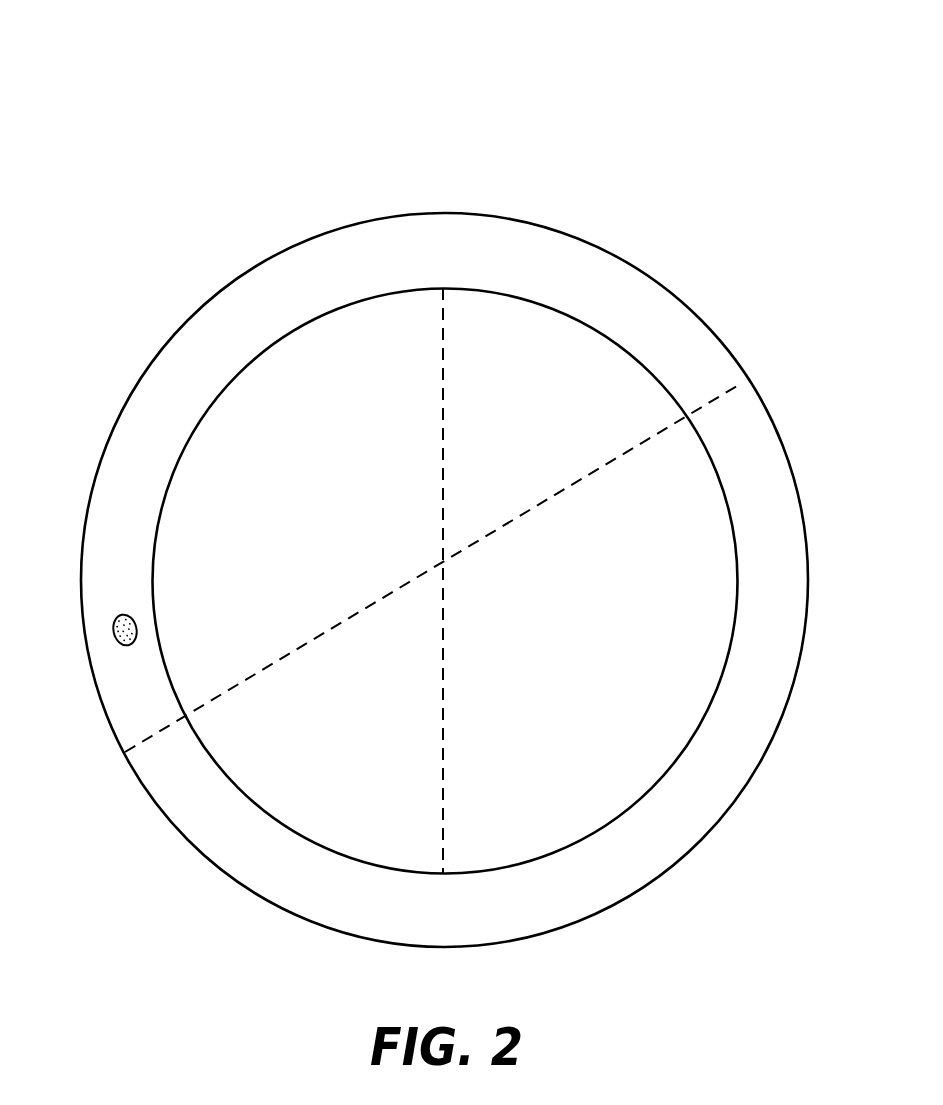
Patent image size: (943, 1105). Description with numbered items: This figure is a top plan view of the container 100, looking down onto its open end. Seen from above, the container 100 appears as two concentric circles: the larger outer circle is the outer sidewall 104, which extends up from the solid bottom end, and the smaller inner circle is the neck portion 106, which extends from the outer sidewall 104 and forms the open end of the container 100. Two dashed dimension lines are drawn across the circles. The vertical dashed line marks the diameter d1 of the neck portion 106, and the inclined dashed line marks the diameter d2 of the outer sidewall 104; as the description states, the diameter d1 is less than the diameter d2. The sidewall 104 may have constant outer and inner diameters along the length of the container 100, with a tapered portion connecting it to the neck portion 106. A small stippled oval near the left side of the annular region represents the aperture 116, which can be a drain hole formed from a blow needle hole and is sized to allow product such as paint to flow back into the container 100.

The container 100 is at (420, 489).
The outer sidewall 104 is at (141, 378).
The neck portion 106 is at (100, 535).
The aperture 116 is at (113, 634).
The diameter of neck portion d1 is at (444, 425).
The diameter of outer sidewall d2 is at (618, 460).